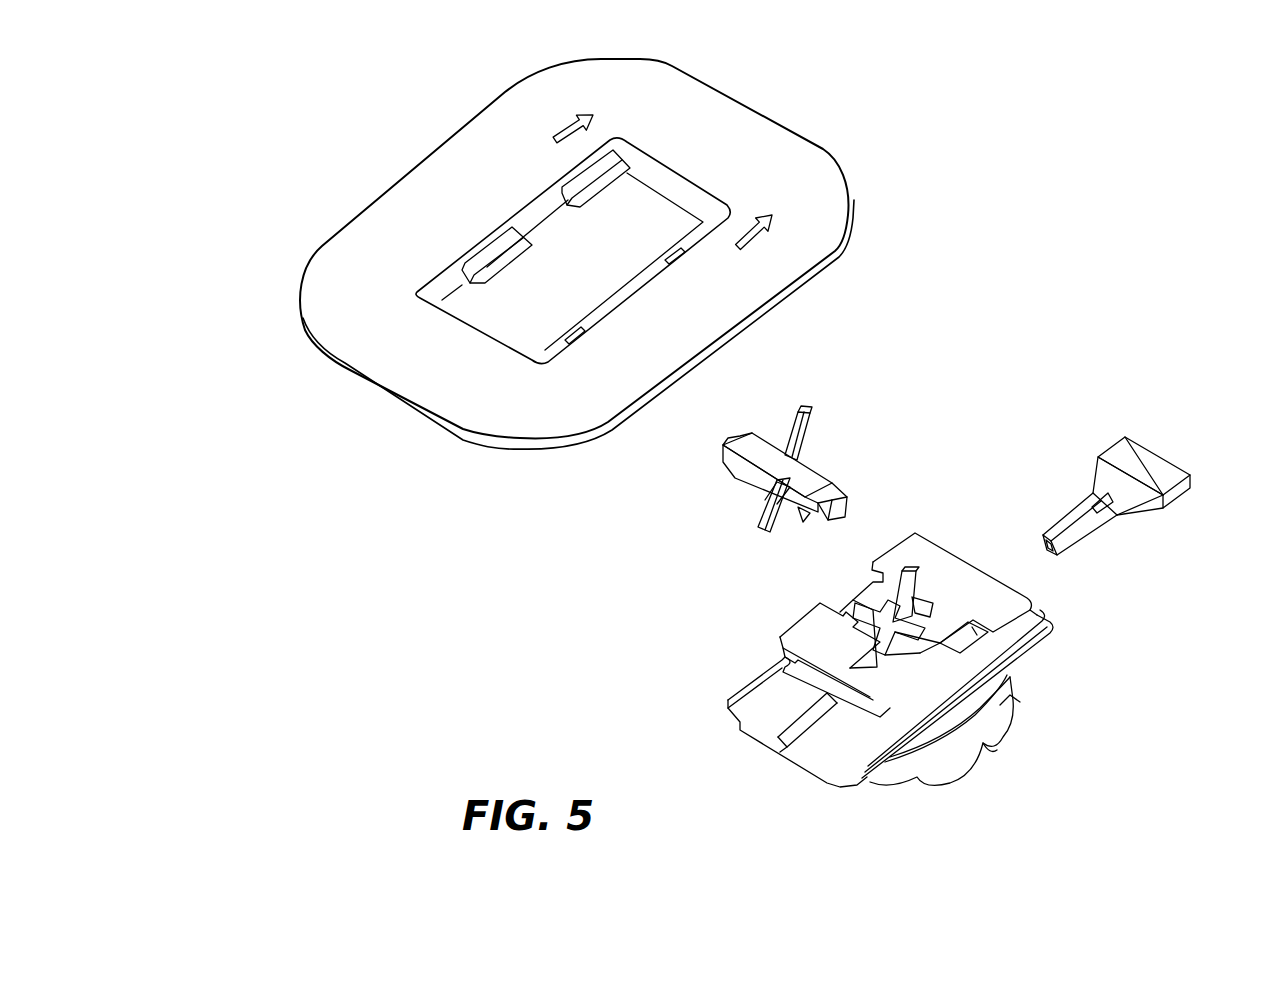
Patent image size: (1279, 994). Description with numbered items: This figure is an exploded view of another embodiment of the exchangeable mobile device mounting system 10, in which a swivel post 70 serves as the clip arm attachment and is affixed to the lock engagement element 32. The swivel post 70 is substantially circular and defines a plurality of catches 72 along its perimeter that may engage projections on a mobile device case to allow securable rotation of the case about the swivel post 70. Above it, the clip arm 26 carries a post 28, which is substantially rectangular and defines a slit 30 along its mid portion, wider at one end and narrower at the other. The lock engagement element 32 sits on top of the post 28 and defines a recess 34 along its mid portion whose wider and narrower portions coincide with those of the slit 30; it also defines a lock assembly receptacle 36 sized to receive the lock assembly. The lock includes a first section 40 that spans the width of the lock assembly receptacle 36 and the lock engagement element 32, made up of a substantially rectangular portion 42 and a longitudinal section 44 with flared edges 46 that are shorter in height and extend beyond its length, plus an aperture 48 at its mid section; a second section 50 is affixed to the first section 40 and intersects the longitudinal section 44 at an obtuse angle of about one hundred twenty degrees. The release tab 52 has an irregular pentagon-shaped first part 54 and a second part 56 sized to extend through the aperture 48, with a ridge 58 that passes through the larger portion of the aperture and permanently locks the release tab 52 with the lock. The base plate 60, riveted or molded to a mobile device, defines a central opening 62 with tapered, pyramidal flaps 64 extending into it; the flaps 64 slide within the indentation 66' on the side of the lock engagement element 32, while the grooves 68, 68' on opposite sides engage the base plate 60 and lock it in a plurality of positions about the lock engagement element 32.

The exchangeable mobile device mounting system 10 is at (420, 619).
The clip arm 26 is at (1043, 643).
The post 28 is at (755, 708).
The slit 30 is at (783, 742).
The lock engagement element 32 is at (950, 538).
The recess 34 is at (827, 703).
The lock assembly receptacle 36 is at (910, 572).
The first section 40 is at (735, 476).
The substantially rectangular portion 42 is at (795, 522).
The longitudinal section 44 is at (812, 465).
The flared edges 46 is at (838, 497).
The aperture 48 is at (782, 500).
The second section 50 is at (805, 408).
The release tab 52 is at (1190, 487).
The first part 54 is at (1157, 453).
The second part 56 is at (1063, 553).
The ridge 58 is at (1075, 537).
The base plate 60 is at (450, 133).
The opening 62 is at (530, 293).
The flaps 64 is at (612, 165).
The indentation 66' is at (1020, 680).
The groove 68 is at (858, 615).
The groove 68' is at (1040, 734).
The swivel post 70 is at (957, 777).
The catches 72 is at (985, 752).